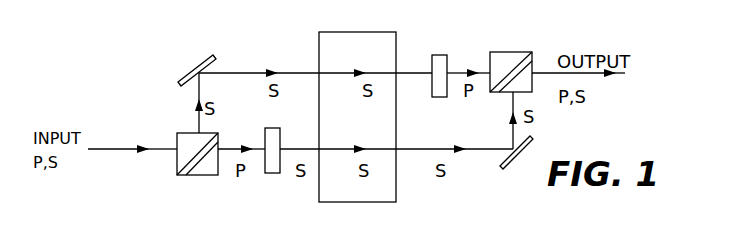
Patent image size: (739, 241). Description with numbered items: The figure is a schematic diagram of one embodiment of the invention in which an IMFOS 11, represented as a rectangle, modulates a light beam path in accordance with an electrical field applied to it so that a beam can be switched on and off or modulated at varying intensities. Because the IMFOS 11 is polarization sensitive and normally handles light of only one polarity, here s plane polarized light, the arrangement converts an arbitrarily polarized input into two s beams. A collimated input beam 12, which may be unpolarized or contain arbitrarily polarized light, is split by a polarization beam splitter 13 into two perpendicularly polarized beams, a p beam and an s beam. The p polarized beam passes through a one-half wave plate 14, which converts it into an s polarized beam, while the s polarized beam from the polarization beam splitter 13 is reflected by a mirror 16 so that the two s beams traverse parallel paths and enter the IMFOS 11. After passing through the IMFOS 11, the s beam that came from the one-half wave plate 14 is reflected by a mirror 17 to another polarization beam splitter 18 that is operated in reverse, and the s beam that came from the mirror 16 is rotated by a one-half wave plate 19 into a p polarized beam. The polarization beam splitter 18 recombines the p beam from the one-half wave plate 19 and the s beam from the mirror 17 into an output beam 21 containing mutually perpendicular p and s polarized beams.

The IMFOS 11 is at (383, 202).
The input beam 12 is at (125, 151).
The polarization beam splitter 13 is at (204, 204).
The ½ wave plate 14 is at (275, 173).
The mirror 16 is at (203, 64).
The mirror 17 is at (520, 158).
The polarization beam splitter 18 is at (528, 39).
The ½ wave plate 19 is at (440, 55).
The output beam 21 is at (618, 73).